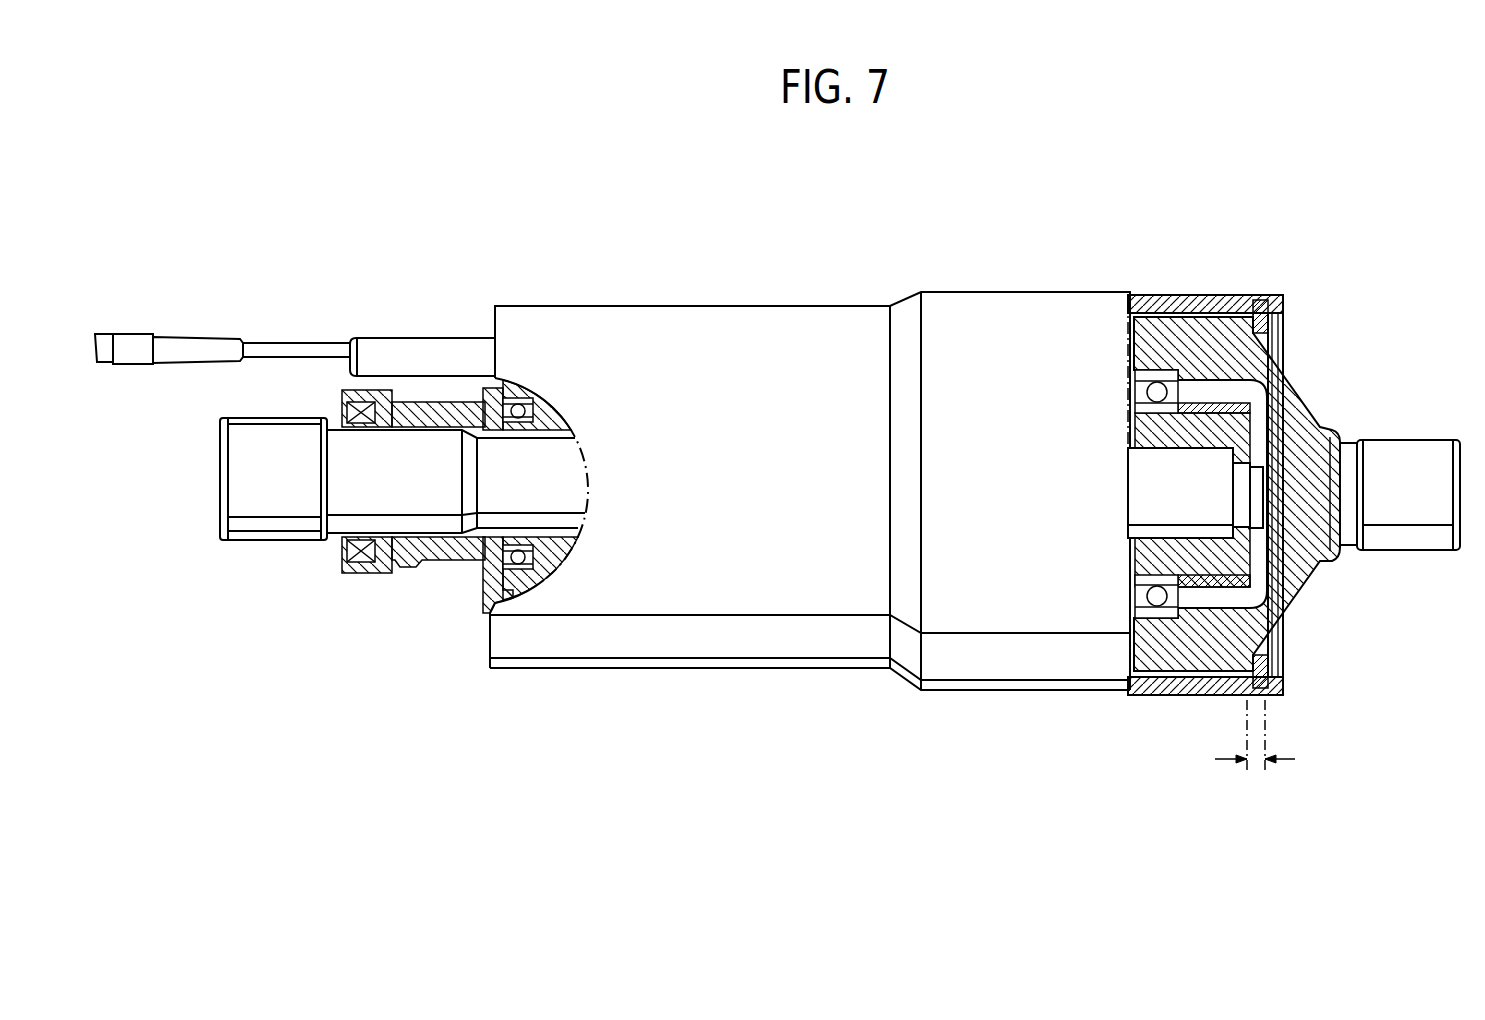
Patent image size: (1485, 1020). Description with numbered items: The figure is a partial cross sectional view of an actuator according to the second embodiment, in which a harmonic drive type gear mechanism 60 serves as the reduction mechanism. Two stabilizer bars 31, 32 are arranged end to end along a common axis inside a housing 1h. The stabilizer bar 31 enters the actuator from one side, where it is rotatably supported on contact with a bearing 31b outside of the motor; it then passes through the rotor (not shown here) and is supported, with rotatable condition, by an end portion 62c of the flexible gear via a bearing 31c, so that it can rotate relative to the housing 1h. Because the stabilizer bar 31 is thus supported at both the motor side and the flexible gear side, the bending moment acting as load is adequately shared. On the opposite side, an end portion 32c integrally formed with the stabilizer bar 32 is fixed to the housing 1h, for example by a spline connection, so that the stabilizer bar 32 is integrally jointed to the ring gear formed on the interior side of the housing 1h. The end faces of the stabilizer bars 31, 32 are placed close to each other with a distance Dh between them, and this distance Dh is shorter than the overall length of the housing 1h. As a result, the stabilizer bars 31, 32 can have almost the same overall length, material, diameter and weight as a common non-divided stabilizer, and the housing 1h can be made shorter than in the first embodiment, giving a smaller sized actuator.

The stabilizer bar 31 is at (278, 503).
The bearing 31b is at (410, 557).
The bearing 31c is at (1153, 600).
The gear mechanism 60 is at (1028, 570).
The end portion of the flexible gear 62c is at (1128, 300).
The housing 1h is at (1195, 298).
The end portion 32c is at (1295, 407).
The stabilizer bar 32 is at (1400, 462).
The distance Dh is at (1255, 747).